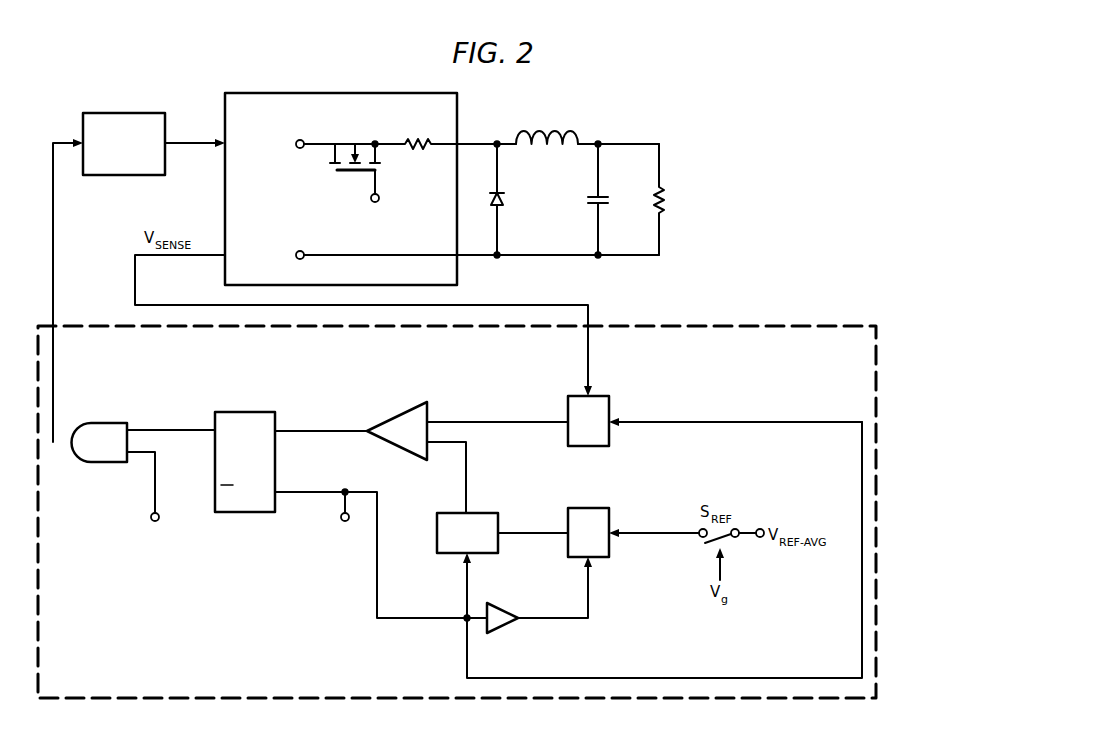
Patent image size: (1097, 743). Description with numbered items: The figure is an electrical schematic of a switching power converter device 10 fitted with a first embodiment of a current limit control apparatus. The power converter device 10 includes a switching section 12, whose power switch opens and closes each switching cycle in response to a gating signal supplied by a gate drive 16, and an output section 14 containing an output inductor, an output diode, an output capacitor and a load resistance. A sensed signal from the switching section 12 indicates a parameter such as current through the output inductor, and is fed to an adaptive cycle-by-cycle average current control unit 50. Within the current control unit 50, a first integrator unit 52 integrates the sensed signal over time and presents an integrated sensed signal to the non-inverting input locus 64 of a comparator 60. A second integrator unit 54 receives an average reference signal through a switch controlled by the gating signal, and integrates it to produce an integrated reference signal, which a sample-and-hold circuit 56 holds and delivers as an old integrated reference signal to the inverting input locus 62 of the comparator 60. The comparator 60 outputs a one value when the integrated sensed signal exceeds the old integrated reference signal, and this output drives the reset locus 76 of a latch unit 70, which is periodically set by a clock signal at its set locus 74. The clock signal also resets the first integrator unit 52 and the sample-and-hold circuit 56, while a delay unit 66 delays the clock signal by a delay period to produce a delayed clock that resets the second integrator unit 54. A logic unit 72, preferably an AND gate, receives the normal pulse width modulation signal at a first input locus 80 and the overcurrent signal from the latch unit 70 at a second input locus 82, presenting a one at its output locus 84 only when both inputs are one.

The power converter device 10 is at (372, 67).
The switching section 12 is at (311, 89).
The output section 14 is at (597, 89).
The gate drive 16 is at (124, 112).
The adaptive cycle-by-cycle average current control unit 50 is at (763, 318).
The first integrator unit 52 is at (610, 438).
The second integrator unit 54 is at (593, 507).
The sample-and-hold circuit 56 is at (435, 532).
The comparator 60 is at (397, 413).
The inverting input locus 62 is at (453, 443).
The non-inverting input locus 64 is at (498, 417).
The delay unit 66 is at (503, 628).
The latch unit 70 is at (243, 410).
The logic unit 72 is at (103, 420).
The set locus 74 is at (293, 497).
The reset locus 76 is at (293, 433).
The first input locus 80 is at (153, 476).
The second input locus 82 is at (170, 433).
The output locus 84 is at (56, 363).